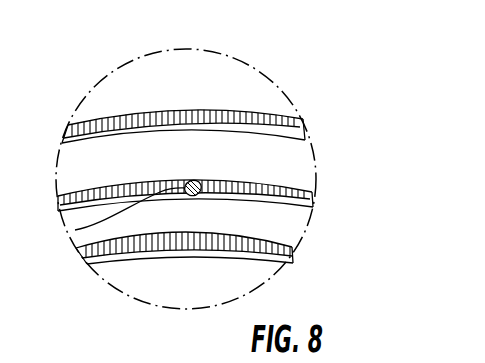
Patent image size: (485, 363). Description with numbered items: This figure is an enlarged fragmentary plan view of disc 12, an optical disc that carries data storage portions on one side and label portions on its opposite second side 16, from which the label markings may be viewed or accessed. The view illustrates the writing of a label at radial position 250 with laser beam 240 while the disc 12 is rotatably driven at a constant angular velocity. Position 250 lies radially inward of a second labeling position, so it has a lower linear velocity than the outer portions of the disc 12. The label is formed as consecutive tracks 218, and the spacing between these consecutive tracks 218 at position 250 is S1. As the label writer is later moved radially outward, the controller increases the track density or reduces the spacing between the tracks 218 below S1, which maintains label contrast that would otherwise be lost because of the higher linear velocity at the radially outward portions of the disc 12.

The disc 12 is at (122, 78).
The second side 16 is at (176, 306).
The tracks 218 is at (306, 126).
The laser beam 240 is at (75, 230).
The position 250 is at (271, 79).
The spacing S1 is at (162, 131).